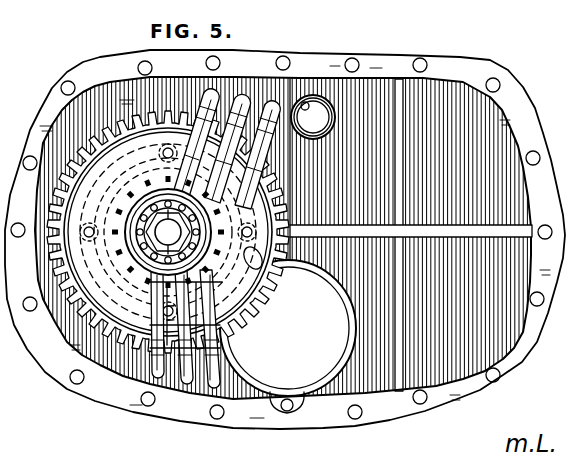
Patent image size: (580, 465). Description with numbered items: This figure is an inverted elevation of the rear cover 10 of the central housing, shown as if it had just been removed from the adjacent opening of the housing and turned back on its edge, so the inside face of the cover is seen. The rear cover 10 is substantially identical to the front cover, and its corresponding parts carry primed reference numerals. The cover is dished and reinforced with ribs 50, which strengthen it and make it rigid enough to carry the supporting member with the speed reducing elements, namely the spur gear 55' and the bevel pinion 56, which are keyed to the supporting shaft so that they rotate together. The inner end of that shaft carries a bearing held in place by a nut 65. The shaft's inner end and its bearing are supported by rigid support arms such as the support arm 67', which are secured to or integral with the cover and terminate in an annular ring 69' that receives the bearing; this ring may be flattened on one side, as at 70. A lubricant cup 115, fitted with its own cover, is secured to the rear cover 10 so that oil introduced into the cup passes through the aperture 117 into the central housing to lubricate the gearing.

The rear cover 10 is at (407, 420).
The ribs 50 is at (411, 232).
The bevel pinion 56 is at (507, 227).
The spur gear 55' is at (288, 336).
The nut 65 is at (147, 263).
The flattened side of annular ring 70 is at (128, 251).
The annular ring 69' is at (196, 211).
The support arm 67' is at (156, 361).
The cup 115 is at (307, 103).
The aperture 117 is at (326, 96).